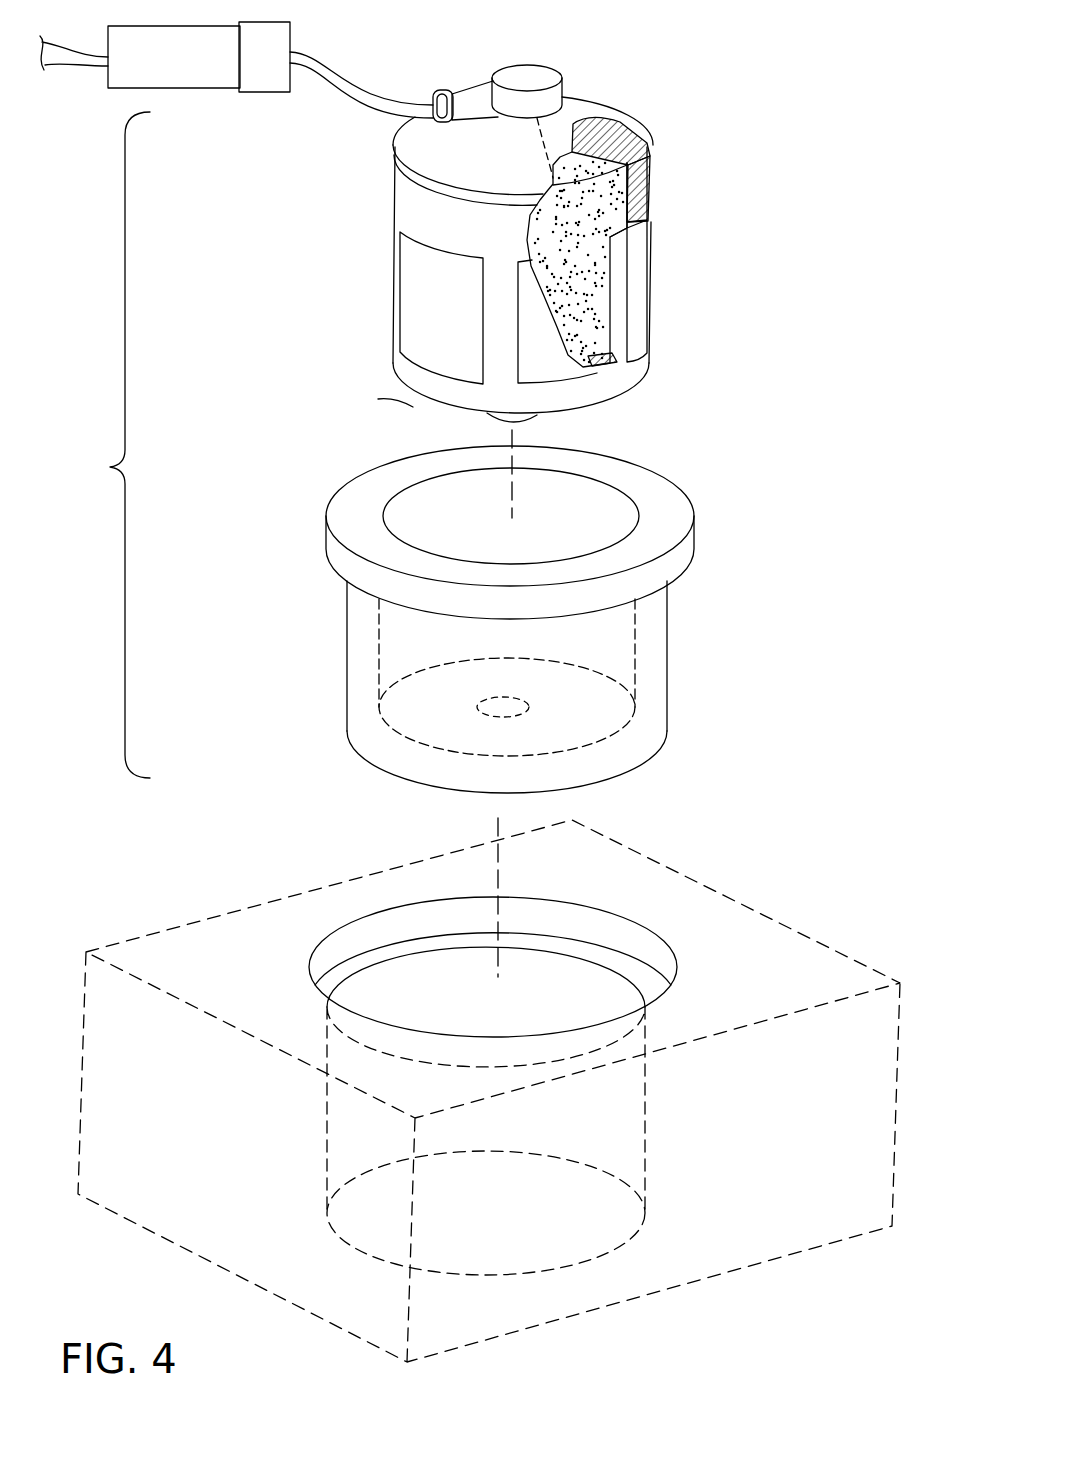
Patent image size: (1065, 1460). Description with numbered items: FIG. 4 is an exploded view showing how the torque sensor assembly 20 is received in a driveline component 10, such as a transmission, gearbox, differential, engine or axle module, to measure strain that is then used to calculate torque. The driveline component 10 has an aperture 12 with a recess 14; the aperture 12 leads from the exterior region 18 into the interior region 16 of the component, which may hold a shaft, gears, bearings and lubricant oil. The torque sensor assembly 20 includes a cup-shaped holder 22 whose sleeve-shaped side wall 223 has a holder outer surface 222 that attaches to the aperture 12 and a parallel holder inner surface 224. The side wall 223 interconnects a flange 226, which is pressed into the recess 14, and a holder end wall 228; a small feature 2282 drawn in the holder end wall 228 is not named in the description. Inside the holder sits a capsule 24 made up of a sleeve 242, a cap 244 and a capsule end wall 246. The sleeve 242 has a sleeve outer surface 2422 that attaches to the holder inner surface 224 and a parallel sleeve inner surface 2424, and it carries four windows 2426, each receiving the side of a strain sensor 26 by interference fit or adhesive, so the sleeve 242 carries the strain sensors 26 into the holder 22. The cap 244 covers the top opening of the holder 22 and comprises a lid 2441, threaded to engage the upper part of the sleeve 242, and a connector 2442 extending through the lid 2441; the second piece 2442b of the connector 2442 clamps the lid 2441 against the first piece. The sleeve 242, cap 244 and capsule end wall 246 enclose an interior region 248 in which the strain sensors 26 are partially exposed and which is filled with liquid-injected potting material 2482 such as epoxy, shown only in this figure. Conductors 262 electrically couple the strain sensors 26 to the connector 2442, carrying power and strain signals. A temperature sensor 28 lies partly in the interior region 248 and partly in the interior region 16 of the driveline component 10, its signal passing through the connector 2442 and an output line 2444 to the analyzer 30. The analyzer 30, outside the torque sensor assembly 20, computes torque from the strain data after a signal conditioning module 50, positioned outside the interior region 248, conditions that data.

The driveline component 10 is at (504, 1093).
The aperture 12 is at (660, 916).
The recess 14 is at (357, 924).
The interior region 16 is at (767, 1377).
The exterior region 18 is at (834, 723).
The torque sensor assembly 20 is at (108, 445).
The holder 22 is at (511, 634).
The holder outer surface 222 is at (347, 593).
The side wall 223 is at (324, 651).
The holder inner surface 224 is at (637, 635).
The flange 226 is at (668, 512).
The holder end wall 228 is at (531, 760).
The drain hole 2282 is at (497, 716).
The capsule 24 is at (660, 260).
The sleeve 242 is at (466, 273).
The sleeve outer surface 2422 is at (394, 170).
The sleeve inner surface 2424 is at (648, 172).
The windows 2426 is at (640, 358).
The cap 244 is at (559, 64).
The lid 2441 is at (505, 162).
The connector 2442 is at (550, 53).
The second piece 2442b is at (516, 66).
The output line 2444 is at (339, 92).
The capsule end wall 246 is at (416, 393).
The interior region 248 is at (649, 257).
The potting material 2482 is at (575, 320).
The strain sensor 26 is at (456, 320).
The conductors 262 is at (610, 246).
The temperature sensor 28 is at (536, 418).
The analyzer 30 is at (196, 71).
The signal conditioning module 50 is at (282, 71).